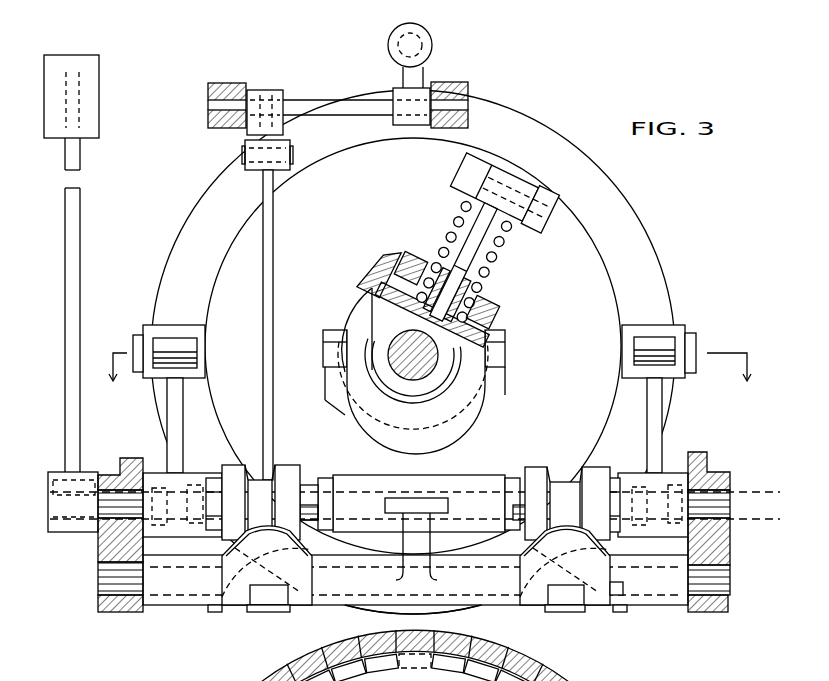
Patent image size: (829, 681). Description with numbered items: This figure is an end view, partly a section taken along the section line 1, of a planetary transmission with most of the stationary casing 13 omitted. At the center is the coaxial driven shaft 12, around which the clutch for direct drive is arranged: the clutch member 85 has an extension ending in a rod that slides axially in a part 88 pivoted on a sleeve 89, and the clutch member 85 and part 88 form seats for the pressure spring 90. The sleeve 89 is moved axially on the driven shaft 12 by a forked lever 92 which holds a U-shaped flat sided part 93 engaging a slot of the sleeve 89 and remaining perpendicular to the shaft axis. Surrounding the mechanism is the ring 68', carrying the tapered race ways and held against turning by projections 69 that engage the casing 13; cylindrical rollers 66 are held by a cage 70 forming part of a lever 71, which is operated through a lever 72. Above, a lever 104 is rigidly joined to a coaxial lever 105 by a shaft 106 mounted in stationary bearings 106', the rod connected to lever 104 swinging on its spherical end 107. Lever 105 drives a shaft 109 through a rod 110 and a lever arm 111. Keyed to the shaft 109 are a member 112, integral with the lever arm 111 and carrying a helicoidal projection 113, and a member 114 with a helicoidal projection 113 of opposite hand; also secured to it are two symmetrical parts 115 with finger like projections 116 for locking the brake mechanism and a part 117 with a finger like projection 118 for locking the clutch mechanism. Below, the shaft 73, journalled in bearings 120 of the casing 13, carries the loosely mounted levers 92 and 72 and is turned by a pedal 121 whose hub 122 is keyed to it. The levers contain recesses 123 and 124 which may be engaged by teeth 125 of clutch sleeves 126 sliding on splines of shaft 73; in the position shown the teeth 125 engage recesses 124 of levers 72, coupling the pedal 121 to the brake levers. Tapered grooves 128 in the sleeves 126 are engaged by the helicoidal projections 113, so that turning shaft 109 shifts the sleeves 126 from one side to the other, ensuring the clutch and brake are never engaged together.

The section line 1 is at (433, 362).
The driven shaft 12 is at (398, 352).
The stationary casing 13 is at (109, 601).
The rollers 66 is at (662, 348).
The ring 68' is at (419, 352).
The projections 69 is at (690, 347).
The cage 70 is at (630, 333).
The lever 71 is at (655, 403).
The lever 72 is at (158, 497).
The shaft 73 is at (112, 502).
The clutch member 85 is at (483, 203).
The part 88 is at (472, 314).
The sleeve 89 is at (394, 300).
The pressure spring 90 is at (500, 246).
The forked lever 92 is at (458, 455).
The U-shaped flat sided part 93 is at (362, 305).
The lever 104 is at (406, 76).
The lever 105 is at (262, 122).
The shaft 106 is at (338, 93).
The stationary bearings 106' is at (353, 90).
The spherical end 107 is at (420, 44).
The shaft 109 is at (118, 572).
The rod 110 is at (268, 292).
The lever arm 111 is at (286, 609).
The member 112 is at (232, 592).
The helicoidal projection 113 is at (210, 583).
The member 114 is at (575, 585).
The symmetrical parts 115 is at (165, 583).
The finger like projections 116 is at (214, 612).
The part 117 is at (462, 586).
The finger like projection 118 is at (430, 546).
The bearings 120 is at (119, 466).
The pedal 121 is at (90, 98).
The hub 122 is at (60, 483).
The recesses 123 is at (325, 478).
The recesses 124 is at (209, 480).
The teeth 125 is at (234, 462).
The clutch sleeves 126 is at (291, 462).
The tapered grooves 128 is at (565, 482).